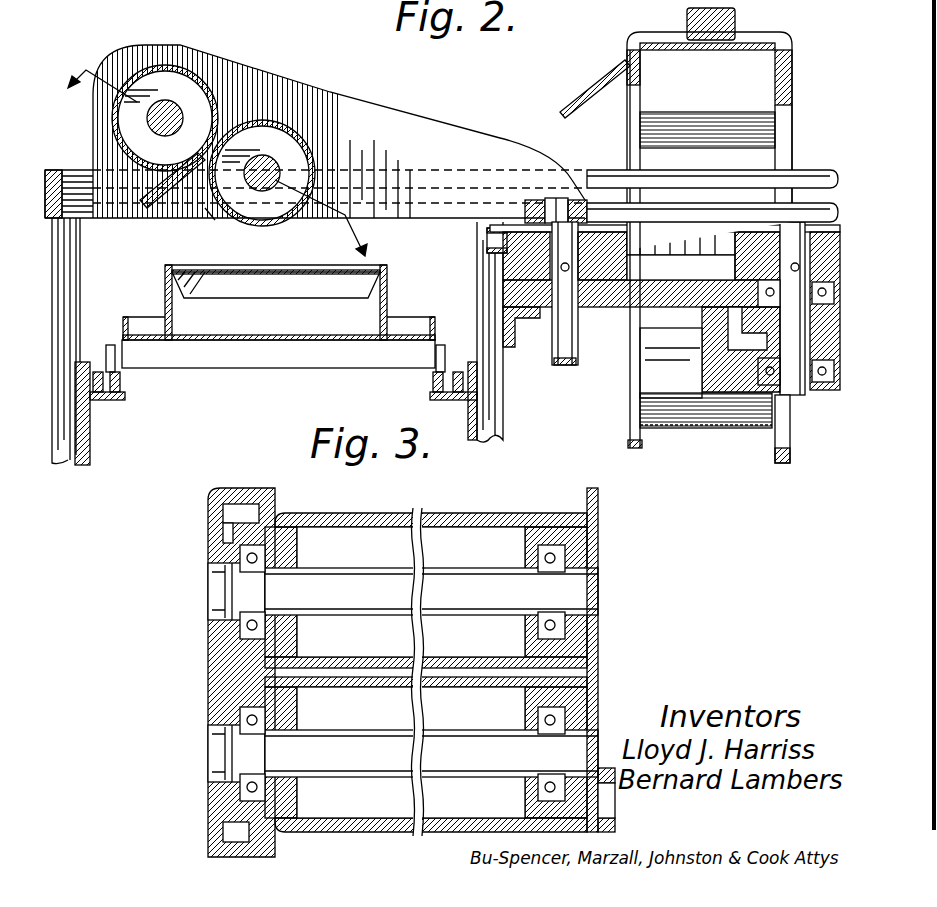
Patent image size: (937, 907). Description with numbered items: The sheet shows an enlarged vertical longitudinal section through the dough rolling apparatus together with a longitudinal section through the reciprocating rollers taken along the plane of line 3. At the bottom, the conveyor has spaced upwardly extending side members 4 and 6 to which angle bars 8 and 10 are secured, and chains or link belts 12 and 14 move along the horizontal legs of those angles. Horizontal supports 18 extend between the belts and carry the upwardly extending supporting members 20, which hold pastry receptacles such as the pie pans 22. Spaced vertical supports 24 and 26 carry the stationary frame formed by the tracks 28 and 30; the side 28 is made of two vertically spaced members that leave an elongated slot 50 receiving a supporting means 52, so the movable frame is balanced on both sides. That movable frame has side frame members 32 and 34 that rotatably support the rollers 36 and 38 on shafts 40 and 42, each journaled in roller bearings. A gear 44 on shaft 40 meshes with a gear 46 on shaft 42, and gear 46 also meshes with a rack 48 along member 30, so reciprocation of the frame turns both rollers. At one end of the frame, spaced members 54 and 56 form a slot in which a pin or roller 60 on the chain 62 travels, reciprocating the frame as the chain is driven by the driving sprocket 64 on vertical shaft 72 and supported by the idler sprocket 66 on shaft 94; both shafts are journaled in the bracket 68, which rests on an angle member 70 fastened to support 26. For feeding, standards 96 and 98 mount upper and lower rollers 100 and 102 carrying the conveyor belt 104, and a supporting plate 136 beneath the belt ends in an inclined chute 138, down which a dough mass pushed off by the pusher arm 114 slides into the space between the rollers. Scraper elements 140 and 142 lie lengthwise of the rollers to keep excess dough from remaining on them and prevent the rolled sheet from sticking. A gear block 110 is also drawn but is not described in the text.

In FIG. 2, the section line 3— 3 is at (228, 149).
In FIG. 2, the side member 4 is at (90, 449).
In FIG. 2, the side member 6 is at (468, 422).
In FIG. 2, the angle bar 8 is at (118, 400).
In FIG. 2, the angle bar 10 is at (440, 396).
In FIG. 2, the chain or link belt 12 is at (120, 382).
In FIG. 2, the chain or link belt 14 is at (433, 385).
In FIG. 2, the horizontal support 18 is at (277, 368).
In FIG. 2, the supporting member 20 is at (387, 300).
In FIG. 2, the pie pan 22 is at (293, 298).
In FIG. 2, the vertical support 24 is at (80, 283).
In FIG. 2, the vertical support 26 is at (503, 392).
In FIG. 2, the track 28 is at (588, 170).
In FIG. 3, the track 28 is at (605, 768).
In FIG. 3, the track 30 is at (215, 845).
In FIG. 2, the side frame member 32 is at (332, 92).
In FIG. 3, the side frame member 32 is at (598, 665).
In FIG. 3, the side frame member 34 is at (275, 494).
In FIG. 2, the roller 36 is at (170, 67).
In FIG. 3, the roller 36 is at (463, 513).
In FIG. 2, the roller 38 is at (275, 127).
In FIG. 3, the roller 38 is at (473, 687).
In FIG. 3, the shaft 40 is at (456, 568).
In FIG. 3, the shaft 42 is at (375, 735).
In FIG. 3, the gear 44 is at (208, 531).
In FIG. 3, the gear 46 is at (208, 695).
In FIG. 3, the rack 48 is at (212, 825).
In FIG. 2, the elongated slot 50 is at (690, 188).
In FIG. 3, the elongated slot 50 is at (615, 800).
In FIG. 3, the supporting means 52 is at (212, 635).
In FIG. 2, the spaced member 54 is at (528, 200).
In FIG. 2, the spaced member 56 is at (588, 203).
In FIG. 2, the pin or roller 60 is at (552, 198).
In FIG. 2, the chain or link belt 62 is at (668, 248).
In FIG. 2, the driving sprocket 64 is at (487, 260).
In FIG. 2, the idler sprocket 66 is at (745, 263).
In FIG. 2, the bracket 68 is at (605, 307).
In FIG. 2, the angle member 70 is at (510, 347).
In FIG. 2, the vertical shaft 72 is at (576, 365).
In FIG. 2, the vertically extending shaft 94 is at (798, 400).
In FIG. 2, the supporting standard 96 is at (630, 442).
In FIG. 2, the supporting standard 98 is at (778, 462).
In FIG. 2, the upper roller 100 is at (792, 72).
In FIG. 2, the lower roller 102 is at (665, 428).
In FIG. 2, the conveyor belt 104 is at (705, 428).
In FIG. 2, the gear block 110 is at (735, 318).
In FIG. 2, the pusher arm 114 is at (687, 21).
In FIG. 2, the supporting plate 136 is at (702, 50).
In FIG. 2, the inclined chute 138 is at (600, 84).
In FIG. 2, the scraper element 140 is at (158, 205).
In FIG. 2, the scraper element 142 is at (212, 214).